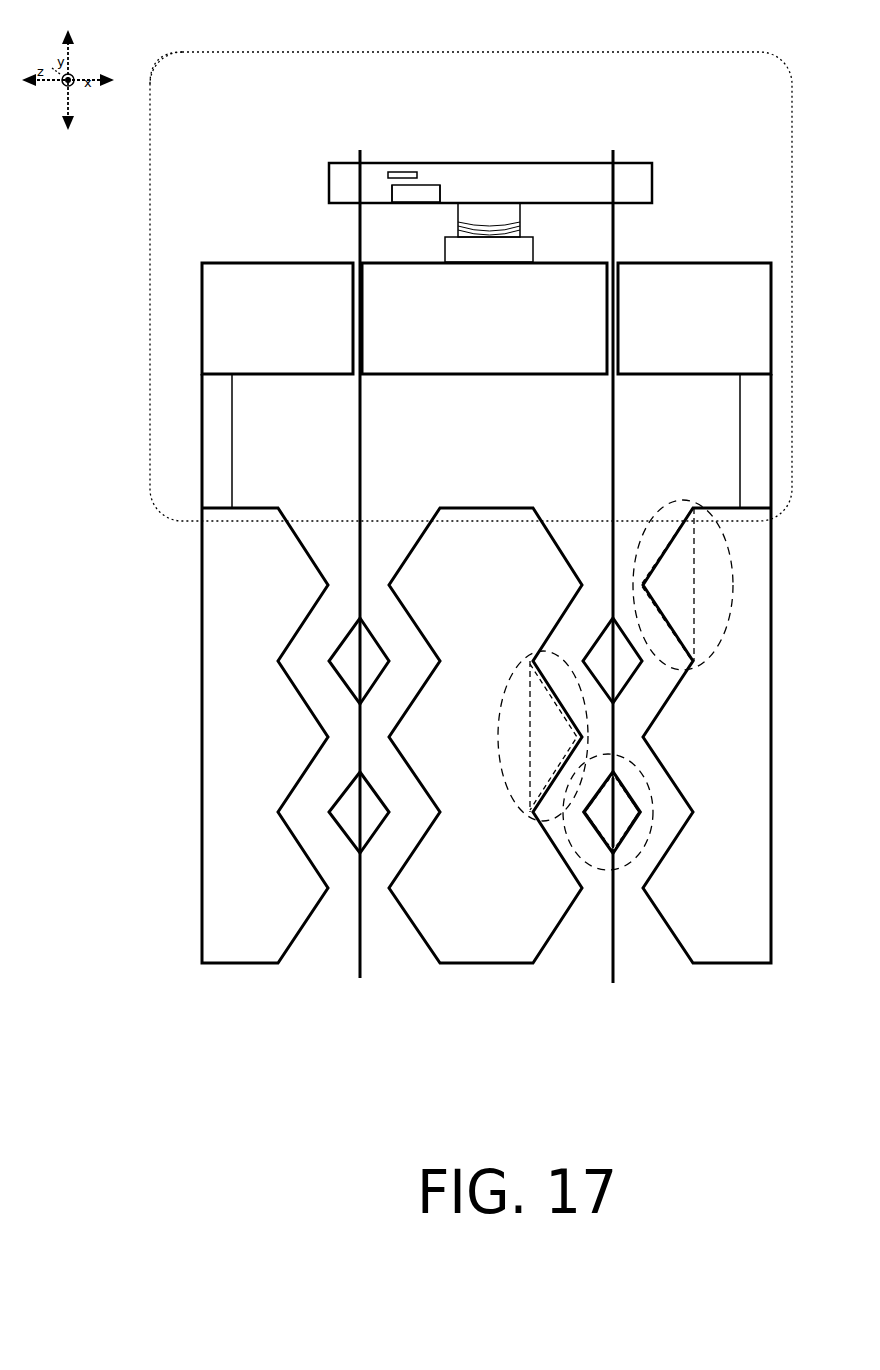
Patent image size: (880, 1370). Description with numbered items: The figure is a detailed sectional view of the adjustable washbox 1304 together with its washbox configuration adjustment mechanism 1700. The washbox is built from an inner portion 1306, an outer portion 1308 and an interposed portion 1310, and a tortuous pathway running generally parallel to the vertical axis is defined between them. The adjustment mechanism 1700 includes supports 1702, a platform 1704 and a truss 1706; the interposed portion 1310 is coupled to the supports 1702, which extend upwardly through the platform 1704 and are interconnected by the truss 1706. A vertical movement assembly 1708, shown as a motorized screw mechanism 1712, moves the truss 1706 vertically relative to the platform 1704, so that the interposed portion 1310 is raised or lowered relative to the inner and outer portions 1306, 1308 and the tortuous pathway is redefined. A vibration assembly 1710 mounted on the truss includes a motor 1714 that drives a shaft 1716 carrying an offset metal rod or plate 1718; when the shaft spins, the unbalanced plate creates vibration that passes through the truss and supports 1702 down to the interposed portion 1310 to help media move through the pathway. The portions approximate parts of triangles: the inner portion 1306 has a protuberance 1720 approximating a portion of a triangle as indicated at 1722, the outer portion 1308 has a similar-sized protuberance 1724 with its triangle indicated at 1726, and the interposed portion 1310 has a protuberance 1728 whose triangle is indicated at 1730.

The adjustable washbox 1304 is at (186, 34).
The inner portion 1306 is at (485, 964).
The outer portion 1308 is at (251, 964).
The interposed portion 1310 is at (614, 503).
The washbox configuration adjustment mechanism 1700 is at (305, 53).
The supports 1702 is at (610, 424).
The platform 1704 is at (484, 318).
The truss 1706 is at (490, 183).
The vertical movement assembly 1708 is at (536, 238).
The vibration assembly 1710 is at (443, 180).
The motorized screw mechanism 1712 is at (458, 228).
The motor 1714 is at (392, 194).
The shaft 1716 is at (418, 186).
The metal rod or plate 1718 is at (395, 172).
The protuberance 1720 is at (525, 662).
The portion of a triangle 1722 is at (528, 720).
The protuberance 1724 is at (648, 512).
The portion of a triangle 1726 is at (694, 656).
The protuberance 1728 is at (640, 770).
The portion of a triangle 1730 is at (625, 838).